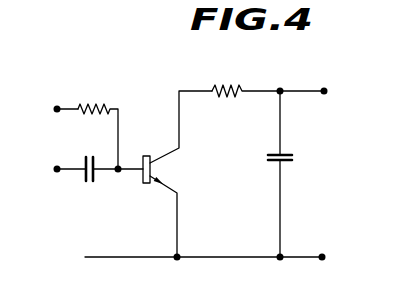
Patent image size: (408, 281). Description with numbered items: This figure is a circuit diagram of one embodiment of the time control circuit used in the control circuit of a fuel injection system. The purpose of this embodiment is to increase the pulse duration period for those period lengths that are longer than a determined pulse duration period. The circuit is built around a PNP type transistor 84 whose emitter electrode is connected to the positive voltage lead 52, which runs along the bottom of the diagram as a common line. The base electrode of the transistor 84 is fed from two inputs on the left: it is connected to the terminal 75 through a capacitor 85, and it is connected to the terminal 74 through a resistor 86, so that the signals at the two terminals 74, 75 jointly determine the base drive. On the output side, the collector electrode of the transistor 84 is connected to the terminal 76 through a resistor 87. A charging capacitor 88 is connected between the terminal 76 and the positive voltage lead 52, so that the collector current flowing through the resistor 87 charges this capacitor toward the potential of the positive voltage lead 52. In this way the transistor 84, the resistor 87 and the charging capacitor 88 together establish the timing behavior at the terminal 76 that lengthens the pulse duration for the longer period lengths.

The terminal 74 is at (54, 109).
The terminal 75 is at (54, 169).
The terminal 76 is at (328, 91).
The PNP type transistor 84 is at (149, 156).
The capacitor 85 is at (94, 178).
The resistor 86 is at (92, 114).
The resistor 87 is at (241, 97).
The charging capacitor 88 is at (291, 161).
The positive voltage lead 52 is at (228, 256).